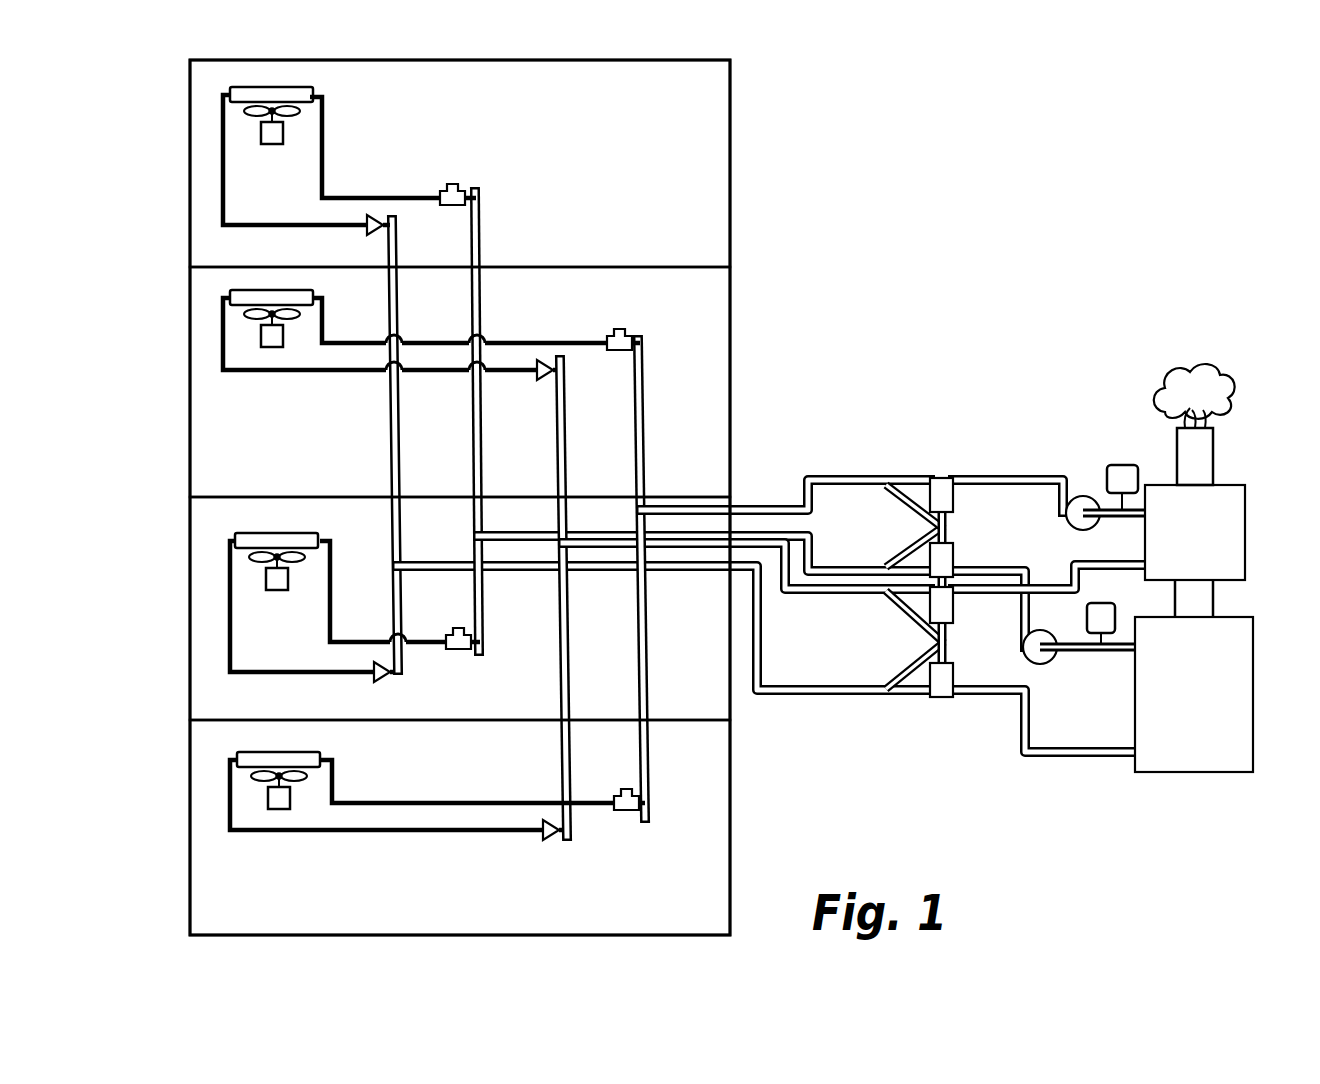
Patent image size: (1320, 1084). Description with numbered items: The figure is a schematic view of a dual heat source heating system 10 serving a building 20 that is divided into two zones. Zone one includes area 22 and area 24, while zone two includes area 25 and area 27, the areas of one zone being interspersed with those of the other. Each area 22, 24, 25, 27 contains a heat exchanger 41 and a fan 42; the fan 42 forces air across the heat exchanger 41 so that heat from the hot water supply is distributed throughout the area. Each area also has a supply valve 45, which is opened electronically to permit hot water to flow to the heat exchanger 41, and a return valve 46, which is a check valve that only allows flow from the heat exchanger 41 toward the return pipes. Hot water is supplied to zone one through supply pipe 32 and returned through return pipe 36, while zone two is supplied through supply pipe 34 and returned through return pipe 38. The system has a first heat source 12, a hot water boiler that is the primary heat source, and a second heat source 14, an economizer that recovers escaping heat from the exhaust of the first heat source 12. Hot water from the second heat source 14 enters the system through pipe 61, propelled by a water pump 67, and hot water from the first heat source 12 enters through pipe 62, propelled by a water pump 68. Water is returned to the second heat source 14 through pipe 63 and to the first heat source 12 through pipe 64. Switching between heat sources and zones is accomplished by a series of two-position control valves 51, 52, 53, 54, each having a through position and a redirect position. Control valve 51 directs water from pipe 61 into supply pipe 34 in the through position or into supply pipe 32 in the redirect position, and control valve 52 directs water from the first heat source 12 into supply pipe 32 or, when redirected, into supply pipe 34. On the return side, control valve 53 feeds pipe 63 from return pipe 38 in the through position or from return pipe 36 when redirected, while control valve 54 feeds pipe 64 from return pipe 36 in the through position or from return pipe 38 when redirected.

The dual heat source heating system 10 is at (1258, 322).
The first heat source 12 is at (1242, 698).
The second heat source 14 is at (1240, 529).
The building 20 is at (728, 60).
The area 22 is at (195, 230).
The area 24 is at (205, 673).
The area 25 is at (207, 453).
The area 27 is at (210, 898).
The supply pipe 32 is at (480, 218).
The supply pipe 34 is at (646, 452).
The return pipe 36 is at (400, 240).
The return pipe 38 is at (566, 440).
The heat exchanger 41 is at (293, 90).
The fan 42 is at (282, 145).
The supply valve 45 is at (452, 184).
The return valve 46 is at (372, 229).
The control valve 51 is at (940, 482).
The control valve 52 is at (950, 555).
The control valve 53 is at (952, 623).
The control valve 54 is at (946, 699).
The pipe 61 is at (1028, 476).
The pipe 62 is at (1027, 568).
The pipe 63 is at (973, 598).
The pipe 64 is at (1080, 757).
The water pump 67 is at (1085, 504).
The water pump 68 is at (1040, 665).